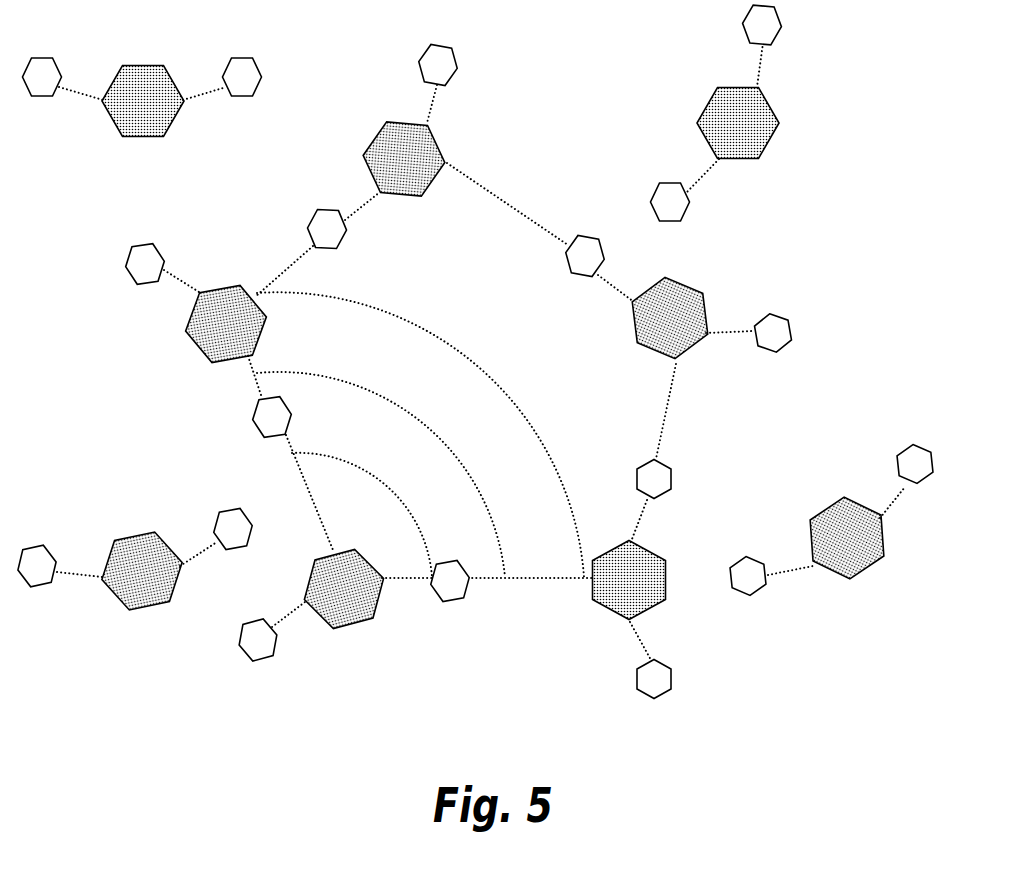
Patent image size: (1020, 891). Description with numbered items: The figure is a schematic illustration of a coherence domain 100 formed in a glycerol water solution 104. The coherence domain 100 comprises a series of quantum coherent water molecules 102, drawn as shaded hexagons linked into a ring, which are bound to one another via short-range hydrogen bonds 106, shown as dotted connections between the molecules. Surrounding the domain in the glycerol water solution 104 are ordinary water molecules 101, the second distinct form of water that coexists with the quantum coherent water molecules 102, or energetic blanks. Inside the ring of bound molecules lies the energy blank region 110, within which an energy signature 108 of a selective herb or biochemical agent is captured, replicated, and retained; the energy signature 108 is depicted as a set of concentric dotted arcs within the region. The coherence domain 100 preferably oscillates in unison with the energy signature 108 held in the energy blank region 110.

The coherence domain 100 is at (300, 181).
The water molecules 101 is at (766, 101).
The quantum coherent water molecules 102 is at (437, 142).
The glycerol water solution 104 is at (97, 402).
The short-range hydrogen bonds 106 is at (665, 413).
The energy signature 108 is at (535, 423).
The energy blank region 110 is at (513, 320).